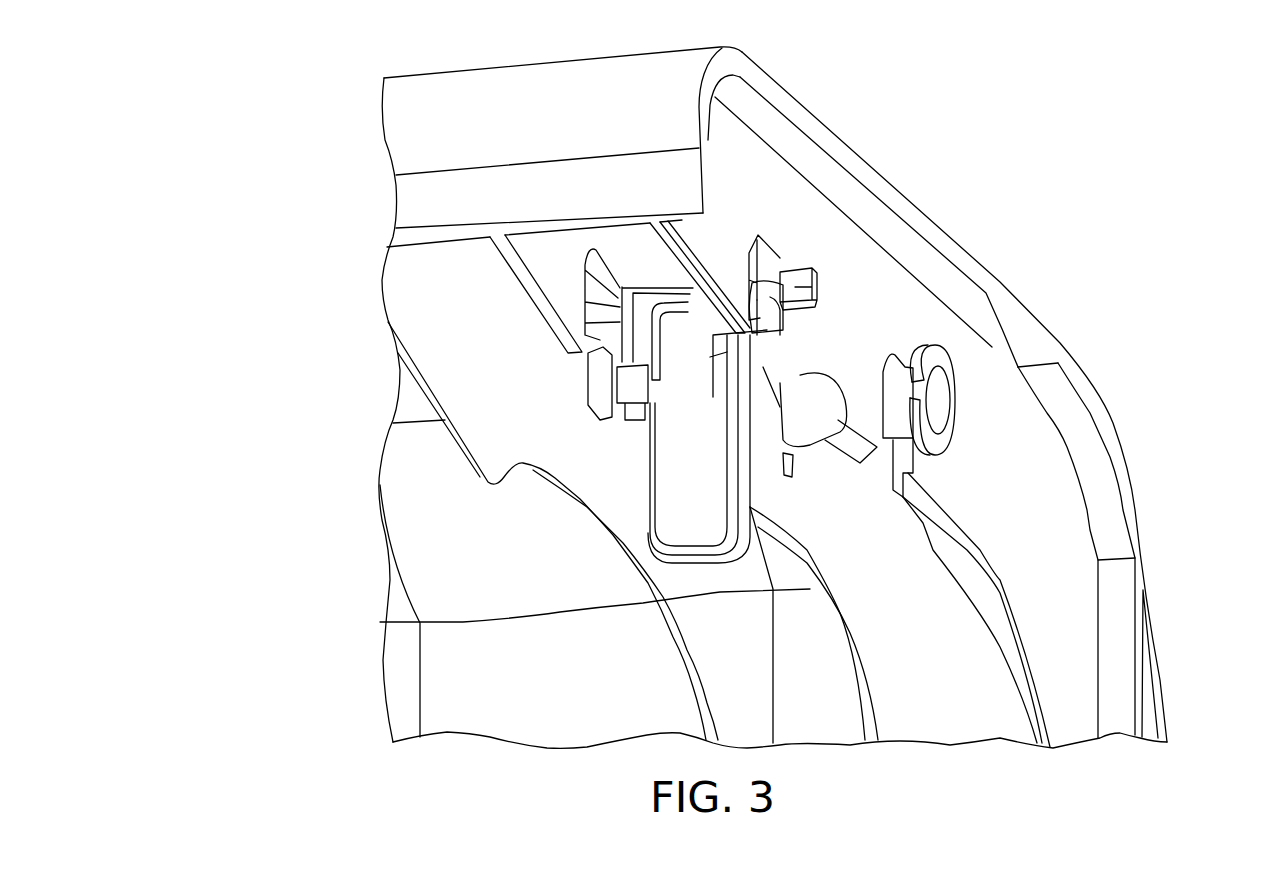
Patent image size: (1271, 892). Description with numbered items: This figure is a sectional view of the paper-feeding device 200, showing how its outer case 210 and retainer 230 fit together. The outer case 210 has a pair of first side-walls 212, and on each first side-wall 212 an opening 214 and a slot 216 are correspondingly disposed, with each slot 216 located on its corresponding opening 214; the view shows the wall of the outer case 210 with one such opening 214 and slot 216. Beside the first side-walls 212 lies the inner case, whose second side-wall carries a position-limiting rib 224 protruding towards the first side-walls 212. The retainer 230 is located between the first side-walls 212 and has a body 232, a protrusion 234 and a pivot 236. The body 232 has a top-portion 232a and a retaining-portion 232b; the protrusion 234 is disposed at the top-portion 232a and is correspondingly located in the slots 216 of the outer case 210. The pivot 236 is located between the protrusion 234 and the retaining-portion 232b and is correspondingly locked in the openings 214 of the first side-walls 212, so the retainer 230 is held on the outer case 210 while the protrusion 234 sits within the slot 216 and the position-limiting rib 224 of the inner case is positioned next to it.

The paper-feeding device 200 is at (1242, 773).
The outer case 210 is at (427, 110).
The first side-wall 212 is at (980, 350).
The opening 214 is at (788, 348).
The slot 216 is at (766, 259).
The position-limiting rib 224 is at (818, 282).
The retainer 230 is at (542, 441).
The body 232 is at (503, 425).
The top-portion 232a is at (685, 303).
The retaining-portion 232b is at (687, 525).
The protrusion 234 is at (770, 297).
The pivot 236 is at (845, 422).